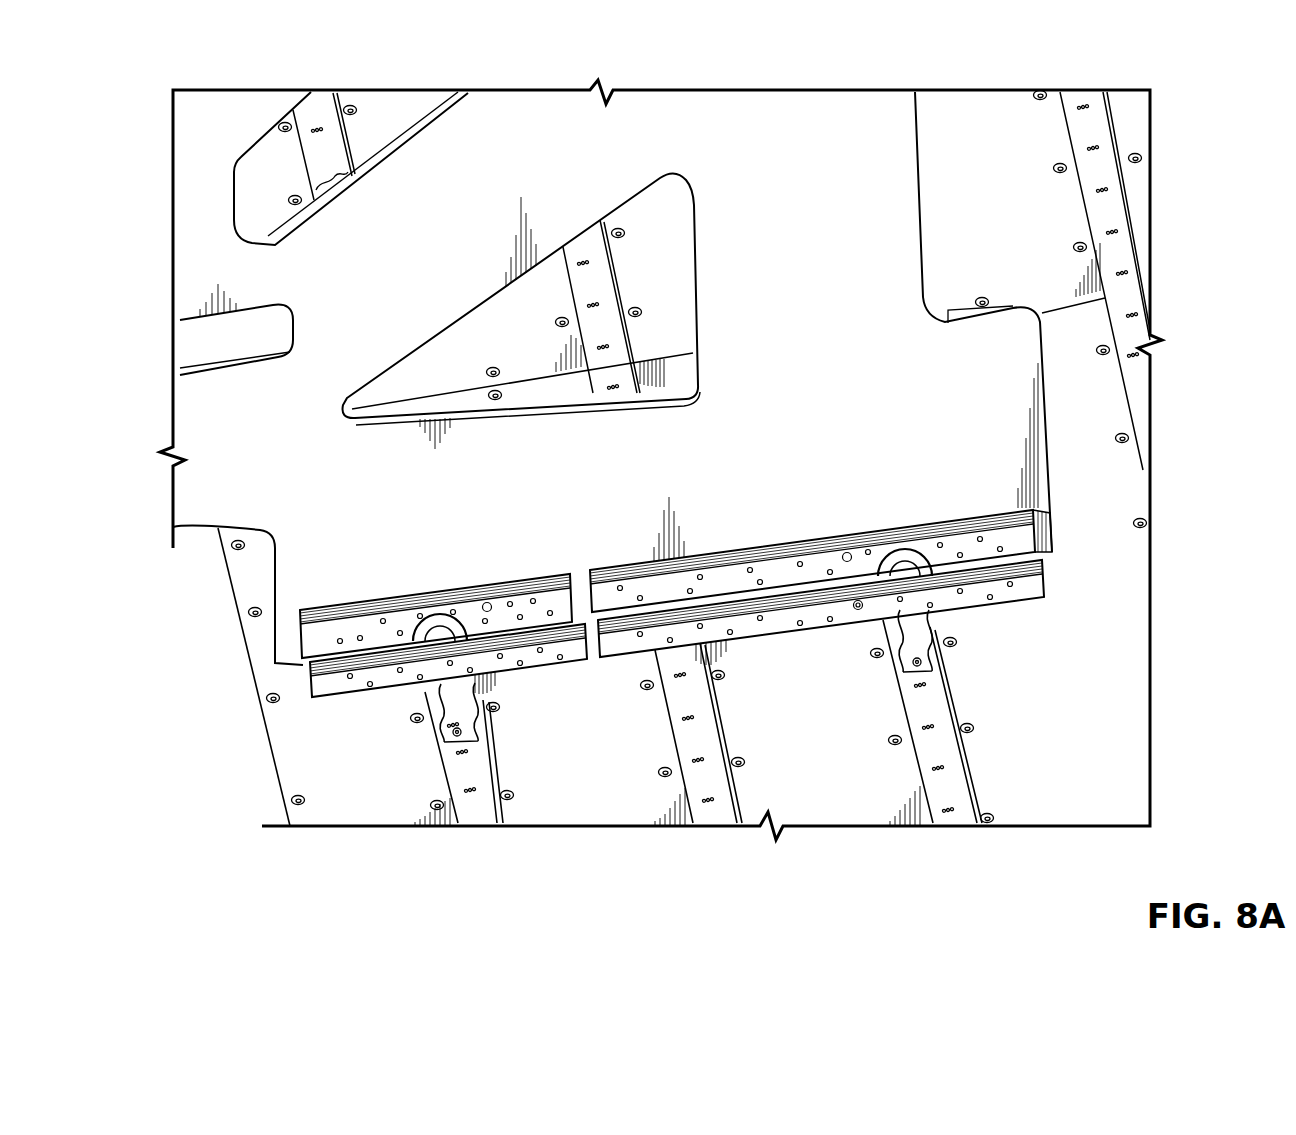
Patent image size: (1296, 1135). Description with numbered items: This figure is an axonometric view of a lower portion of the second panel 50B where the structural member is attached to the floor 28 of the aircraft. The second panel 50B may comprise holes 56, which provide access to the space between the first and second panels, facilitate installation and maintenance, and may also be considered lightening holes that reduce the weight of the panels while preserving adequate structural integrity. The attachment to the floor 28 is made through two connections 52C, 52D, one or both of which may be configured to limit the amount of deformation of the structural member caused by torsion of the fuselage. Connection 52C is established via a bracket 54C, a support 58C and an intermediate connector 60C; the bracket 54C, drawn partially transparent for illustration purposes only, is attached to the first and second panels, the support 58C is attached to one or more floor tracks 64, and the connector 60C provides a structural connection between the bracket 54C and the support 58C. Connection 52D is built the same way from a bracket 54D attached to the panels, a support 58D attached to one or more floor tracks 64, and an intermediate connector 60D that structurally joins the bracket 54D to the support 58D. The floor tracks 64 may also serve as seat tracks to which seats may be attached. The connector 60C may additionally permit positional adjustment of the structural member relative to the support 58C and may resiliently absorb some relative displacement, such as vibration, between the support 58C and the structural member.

The floor 28 is at (815, 769).
The second panel 50B is at (833, 354).
The connection 52C is at (917, 598).
The connection 52D is at (408, 749).
The bracket 54C is at (1013, 578).
The bracket 54D is at (313, 660).
The holes 56 is at (552, 290).
The support 58C is at (917, 660).
The support 58D is at (453, 708).
The intermediate connector 60C is at (920, 617).
The intermediate connector 60D is at (450, 685).
The floor tracks 64 is at (472, 812).